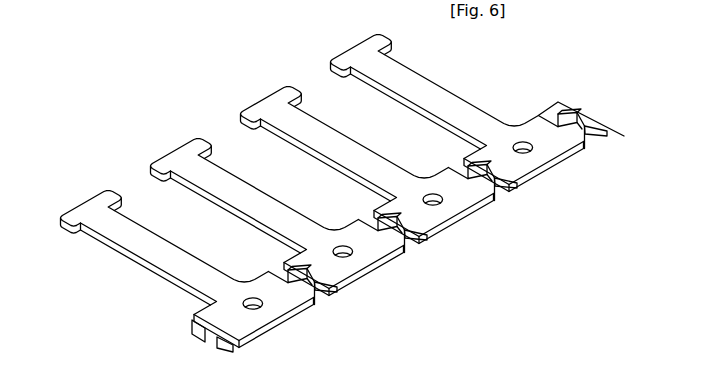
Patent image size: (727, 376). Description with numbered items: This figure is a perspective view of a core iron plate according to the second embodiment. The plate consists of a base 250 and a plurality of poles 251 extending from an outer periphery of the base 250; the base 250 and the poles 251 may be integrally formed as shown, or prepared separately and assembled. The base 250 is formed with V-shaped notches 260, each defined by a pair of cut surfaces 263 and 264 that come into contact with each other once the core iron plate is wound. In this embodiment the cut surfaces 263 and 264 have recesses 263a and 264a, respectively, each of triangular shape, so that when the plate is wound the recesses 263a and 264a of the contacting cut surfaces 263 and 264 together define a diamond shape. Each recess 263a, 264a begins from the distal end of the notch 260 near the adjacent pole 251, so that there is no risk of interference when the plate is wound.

The base 250 is at (470, 200).
The pole 251 is at (157, 252).
The V-shaped notch 260 is at (446, 217).
The cut surface 263 is at (398, 248).
The cut surface 264 is at (418, 240).
The recess 263a is at (480, 162).
The recess 264a is at (493, 172).